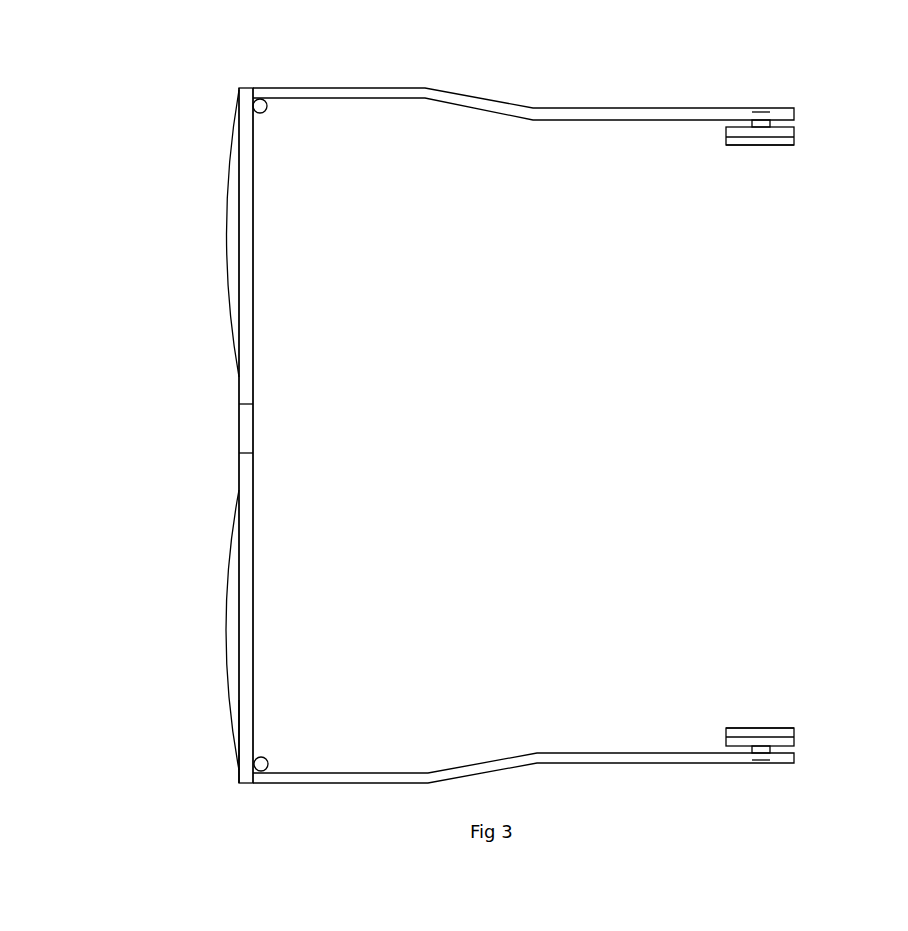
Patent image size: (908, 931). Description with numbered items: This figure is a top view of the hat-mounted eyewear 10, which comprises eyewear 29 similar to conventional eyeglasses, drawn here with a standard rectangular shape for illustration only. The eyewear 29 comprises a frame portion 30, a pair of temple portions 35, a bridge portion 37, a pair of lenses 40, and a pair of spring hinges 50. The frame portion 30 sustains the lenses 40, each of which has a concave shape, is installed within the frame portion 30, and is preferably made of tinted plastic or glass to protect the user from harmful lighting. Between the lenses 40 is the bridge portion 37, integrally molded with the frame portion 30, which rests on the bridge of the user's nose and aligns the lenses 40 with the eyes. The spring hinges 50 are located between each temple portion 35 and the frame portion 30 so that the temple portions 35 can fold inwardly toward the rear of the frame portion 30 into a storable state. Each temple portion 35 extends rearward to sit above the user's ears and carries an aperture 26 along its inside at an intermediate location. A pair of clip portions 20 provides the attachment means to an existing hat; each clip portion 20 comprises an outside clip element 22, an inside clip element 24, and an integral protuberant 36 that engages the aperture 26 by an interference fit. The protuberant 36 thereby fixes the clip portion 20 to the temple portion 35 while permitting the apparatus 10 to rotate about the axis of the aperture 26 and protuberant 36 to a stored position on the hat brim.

The hat-mounted eyewear 10 is at (140, 137).
The clip portion 20 is at (808, 133).
The outside clip element 22 is at (726, 130).
The inside clip element 24 is at (777, 143).
The aperture 26 is at (770, 112).
The eyewear 29 is at (190, 768).
The frame portion 30 is at (247, 300).
The temple portion 35 is at (550, 118).
The protuberant 36 is at (752, 112).
The bridge portion 37 is at (239, 429).
The lens 40 is at (228, 208).
The spring hinge 50 is at (266, 112).